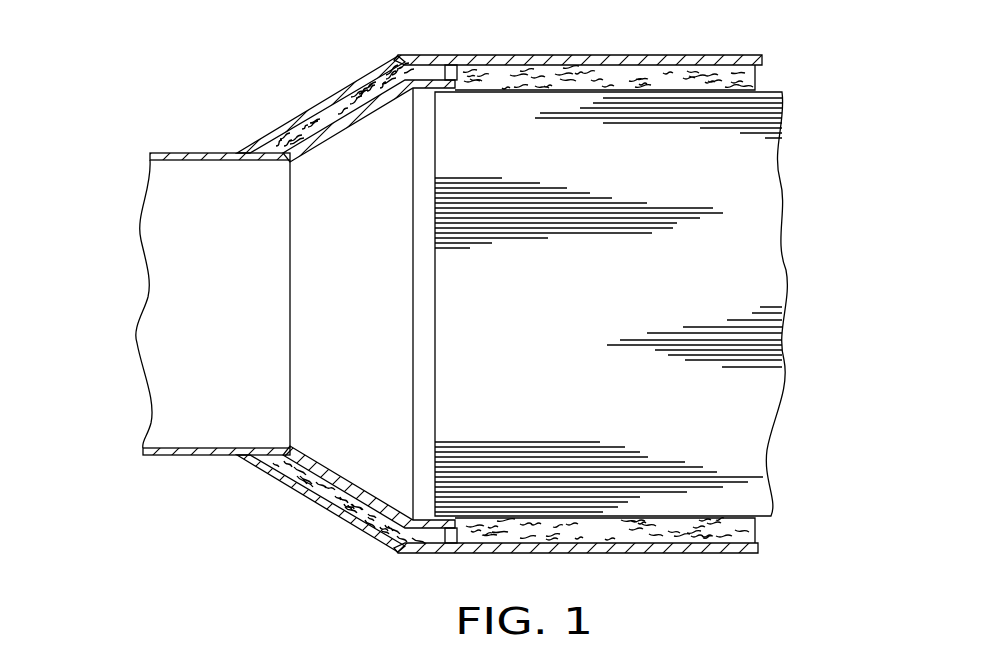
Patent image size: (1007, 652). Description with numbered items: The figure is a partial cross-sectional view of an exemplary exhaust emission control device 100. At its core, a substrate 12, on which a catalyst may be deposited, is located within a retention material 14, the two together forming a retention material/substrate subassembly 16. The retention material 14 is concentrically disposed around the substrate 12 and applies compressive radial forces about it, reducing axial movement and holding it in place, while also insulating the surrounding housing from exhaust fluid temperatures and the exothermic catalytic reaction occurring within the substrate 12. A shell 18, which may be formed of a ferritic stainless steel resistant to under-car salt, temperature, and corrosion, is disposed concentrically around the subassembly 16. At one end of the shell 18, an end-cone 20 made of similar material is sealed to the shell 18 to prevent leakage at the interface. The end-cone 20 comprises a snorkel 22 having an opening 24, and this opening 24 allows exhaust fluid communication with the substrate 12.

The exhaust emission control device 100 is at (190, 58).
The substrate 12 is at (781, 123).
The retention material 14 is at (673, 78).
The subassembly 16 is at (530, 310).
The shell 18 is at (458, 56).
The end-cone 20 is at (337, 118).
The snorkel 22 is at (185, 458).
The opening 24 is at (137, 240).